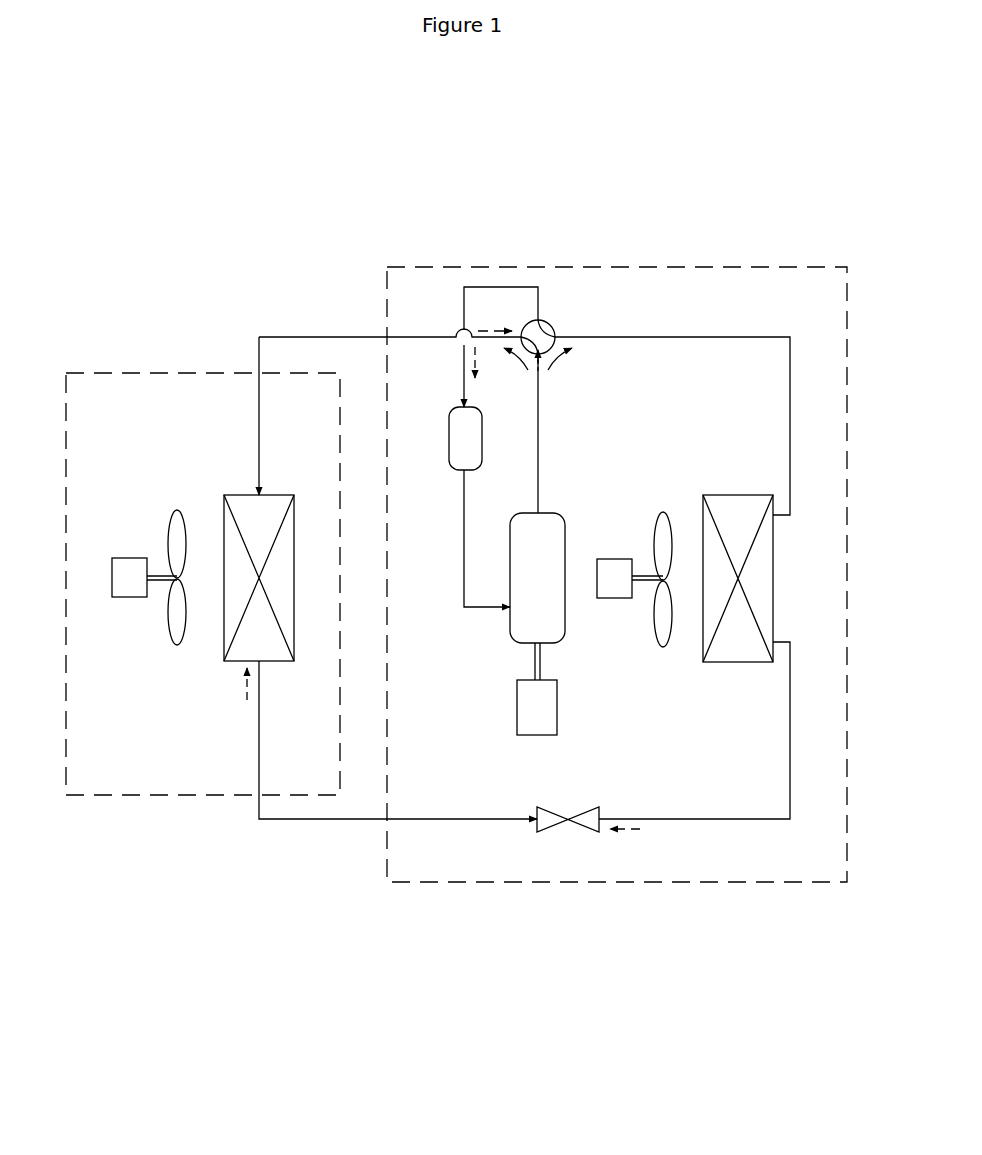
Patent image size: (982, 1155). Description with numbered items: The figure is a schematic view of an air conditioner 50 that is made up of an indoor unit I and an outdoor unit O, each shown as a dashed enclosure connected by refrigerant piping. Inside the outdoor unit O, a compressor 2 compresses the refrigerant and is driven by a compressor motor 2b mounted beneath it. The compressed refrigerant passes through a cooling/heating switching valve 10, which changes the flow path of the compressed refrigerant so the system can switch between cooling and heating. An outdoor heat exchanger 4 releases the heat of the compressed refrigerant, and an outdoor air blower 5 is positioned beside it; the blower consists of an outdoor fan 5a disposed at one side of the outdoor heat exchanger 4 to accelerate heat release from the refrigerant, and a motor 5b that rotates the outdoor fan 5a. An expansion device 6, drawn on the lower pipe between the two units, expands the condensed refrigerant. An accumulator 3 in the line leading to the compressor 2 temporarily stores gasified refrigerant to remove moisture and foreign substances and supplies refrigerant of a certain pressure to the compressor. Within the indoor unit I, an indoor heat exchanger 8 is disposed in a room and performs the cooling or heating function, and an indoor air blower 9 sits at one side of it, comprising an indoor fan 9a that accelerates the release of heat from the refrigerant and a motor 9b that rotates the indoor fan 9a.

The air conditioner 50 is at (788, 188).
The outdoor unit O is at (662, 888).
The indoor unit I is at (211, 800).
The cooling/heating switching valve 10 is at (555, 325).
The accumulator 3 is at (449, 437).
The compressor 2 is at (537, 612).
The compressor motor 2b is at (557, 706).
The outdoor air blower 5 is at (631, 525).
The outdoor fan 5a is at (660, 512).
The motor 5b is at (616, 570).
The outdoor heat exchanger 4 is at (752, 565).
The expansion device 6 is at (586, 833).
The indoor heat exchanger 8 is at (267, 648).
The indoor air blower 9 is at (128, 705).
The indoor fan 9a is at (178, 633).
The motor 9b is at (125, 587).